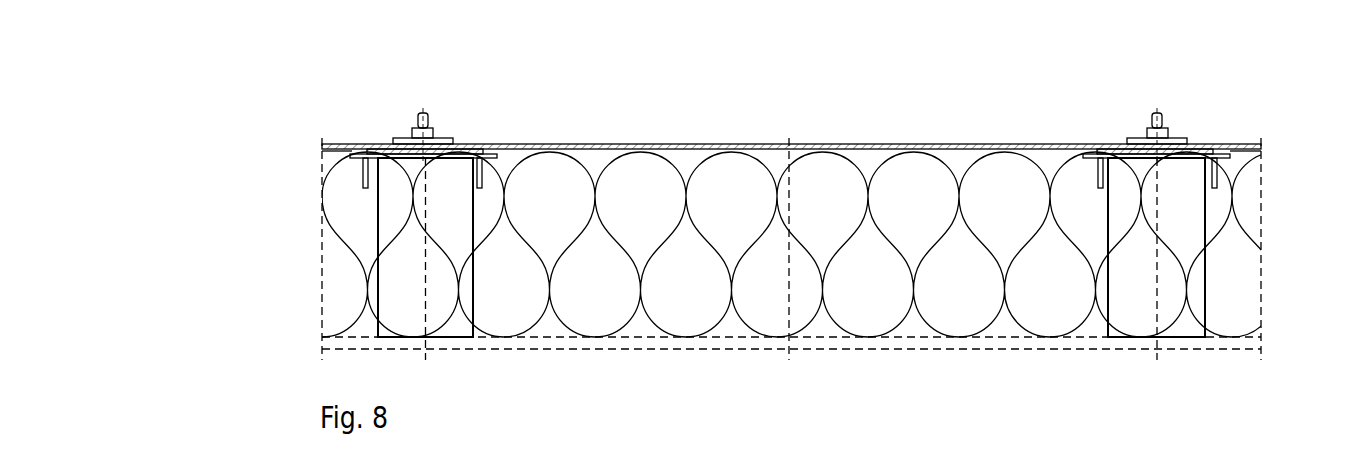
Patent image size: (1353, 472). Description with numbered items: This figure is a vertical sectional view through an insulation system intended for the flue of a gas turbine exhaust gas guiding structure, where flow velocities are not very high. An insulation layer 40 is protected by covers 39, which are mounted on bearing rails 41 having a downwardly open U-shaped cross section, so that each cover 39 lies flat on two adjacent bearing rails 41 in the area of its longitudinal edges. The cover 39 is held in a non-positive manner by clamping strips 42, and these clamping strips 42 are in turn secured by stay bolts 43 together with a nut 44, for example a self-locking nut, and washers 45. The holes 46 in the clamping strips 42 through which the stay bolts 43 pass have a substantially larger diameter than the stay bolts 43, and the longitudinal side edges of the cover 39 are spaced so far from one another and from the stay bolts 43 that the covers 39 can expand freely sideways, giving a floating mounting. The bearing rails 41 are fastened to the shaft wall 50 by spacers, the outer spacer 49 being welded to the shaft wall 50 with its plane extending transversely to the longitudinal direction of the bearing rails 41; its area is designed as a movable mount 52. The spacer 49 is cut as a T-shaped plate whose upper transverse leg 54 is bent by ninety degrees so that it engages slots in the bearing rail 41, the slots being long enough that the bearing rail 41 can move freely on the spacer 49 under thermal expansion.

The cover 39 is at (340, 145).
The insulation layer 40 is at (913, 300).
The bearing rail 41 is at (362, 170).
The clamping strip 42 is at (373, 143).
The stay bolt 43 is at (423, 110).
The nut 44 is at (436, 137).
The washer 45 is at (455, 137).
The hole 46 is at (410, 133).
The spacer 49 is at (428, 312).
The shaft wall 50 is at (733, 342).
The movable mount 52 is at (791, 208).
The transverse leg 54 is at (350, 152).